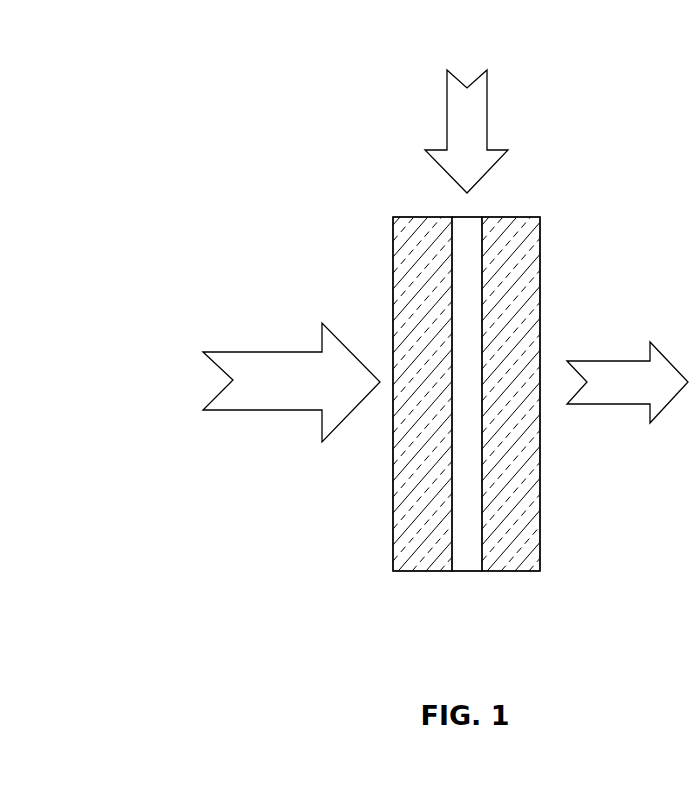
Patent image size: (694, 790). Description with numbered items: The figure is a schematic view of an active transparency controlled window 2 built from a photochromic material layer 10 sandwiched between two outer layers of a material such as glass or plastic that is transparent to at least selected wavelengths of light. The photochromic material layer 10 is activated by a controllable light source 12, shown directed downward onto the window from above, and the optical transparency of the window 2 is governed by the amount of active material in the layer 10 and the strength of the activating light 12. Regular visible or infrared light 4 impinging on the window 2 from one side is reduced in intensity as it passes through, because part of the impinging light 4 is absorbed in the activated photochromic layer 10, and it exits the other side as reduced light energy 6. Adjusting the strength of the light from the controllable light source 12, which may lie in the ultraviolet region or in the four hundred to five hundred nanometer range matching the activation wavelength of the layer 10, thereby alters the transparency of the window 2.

The active transparency controlled window 2 is at (603, 140).
The impinging light 4 is at (252, 352).
The reduced light energy 6 is at (592, 361).
The photochromic material layer 10 is at (468, 571).
The controllable light source 12 is at (487, 97).